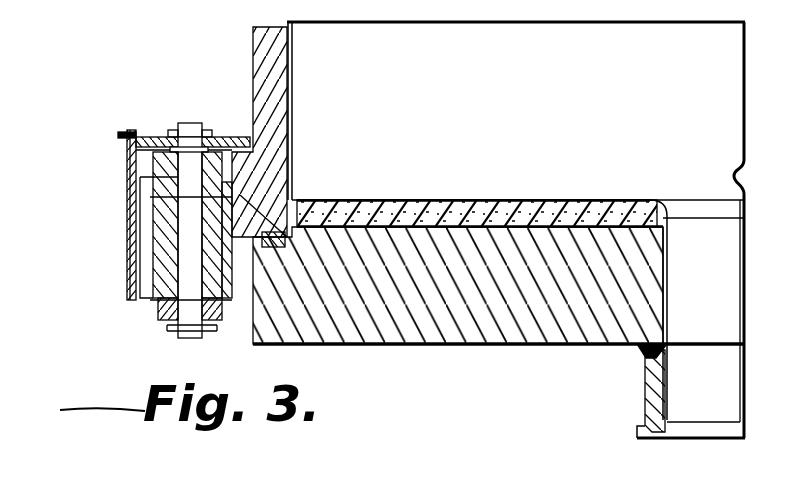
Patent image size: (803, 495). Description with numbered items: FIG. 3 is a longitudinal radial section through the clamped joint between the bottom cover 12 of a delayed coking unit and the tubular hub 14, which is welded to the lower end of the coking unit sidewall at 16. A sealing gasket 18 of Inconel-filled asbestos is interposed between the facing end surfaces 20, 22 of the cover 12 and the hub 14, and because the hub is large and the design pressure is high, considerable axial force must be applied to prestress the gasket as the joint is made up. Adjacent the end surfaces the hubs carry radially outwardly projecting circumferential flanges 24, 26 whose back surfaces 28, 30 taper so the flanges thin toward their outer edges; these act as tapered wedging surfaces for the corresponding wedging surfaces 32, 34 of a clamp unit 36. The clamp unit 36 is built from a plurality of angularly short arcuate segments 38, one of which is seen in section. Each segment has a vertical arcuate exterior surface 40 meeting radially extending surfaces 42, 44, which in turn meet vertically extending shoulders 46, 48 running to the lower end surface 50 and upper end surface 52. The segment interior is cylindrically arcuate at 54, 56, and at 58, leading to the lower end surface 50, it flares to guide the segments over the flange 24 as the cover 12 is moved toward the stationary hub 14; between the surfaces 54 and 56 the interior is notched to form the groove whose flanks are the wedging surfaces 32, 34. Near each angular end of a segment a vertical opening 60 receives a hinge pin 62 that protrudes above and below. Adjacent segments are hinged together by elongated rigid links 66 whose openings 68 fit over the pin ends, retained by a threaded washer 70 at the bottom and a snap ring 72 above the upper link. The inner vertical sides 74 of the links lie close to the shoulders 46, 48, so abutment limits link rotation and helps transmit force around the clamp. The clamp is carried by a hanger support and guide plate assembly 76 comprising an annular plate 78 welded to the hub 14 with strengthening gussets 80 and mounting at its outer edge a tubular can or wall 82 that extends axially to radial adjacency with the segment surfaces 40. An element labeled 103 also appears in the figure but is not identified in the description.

The bottom cover 12 is at (420, 344).
The tubular hub 14 is at (266, 82).
The weld to coking unit sidewall 16 is at (286, 23).
The sealing gasket 18 is at (287, 240).
The facing end surface 20 is at (296, 207).
The facing end surface 22 is at (250, 215).
The circumferential flange 24 is at (187, 237).
The circumferential flange 26 is at (138, 238).
The back surface 28 is at (250, 303).
The back surface 30 is at (238, 208).
The wedging surface 32 is at (250, 249).
The wedging surface 34 is at (253, 200).
The clamp unit 36 is at (100, 165).
The arcuate segment 38 is at (136, 282).
The arcuate-exterior surface 40 is at (138, 258).
The radially extending surface 42 is at (147, 303).
The radially extending surface 44 is at (150, 140).
The arcuate shoulder 46 is at (250, 331).
The arcuate shoulder 48 is at (268, 58).
The lower end surface 50 is at (255, 342).
The upper end surface 52 is at (262, 134).
The cylindrically arcuate interior surface 54 is at (262, 273).
The cylindrically arcuate interior surface 56 is at (253, 156).
The flared interior guide 58 is at (300, 345).
The vertical opening 60 is at (138, 203).
The hinge pin 62 is at (138, 220).
The rigid link 66 is at (140, 190).
The link opening 68 is at (170, 147).
The threaded washer 70 is at (190, 339).
The snap ring 72 is at (194, 124).
The inner vertical side 74 is at (250, 263).
The clamp hanger support and guide plate assembly 76 is at (118, 136).
The annular plate 78 is at (134, 129).
The gusset 80 is at (288, 96).
The tubular can 82 is at (127, 148).
The aperture 103 is at (222, 135).